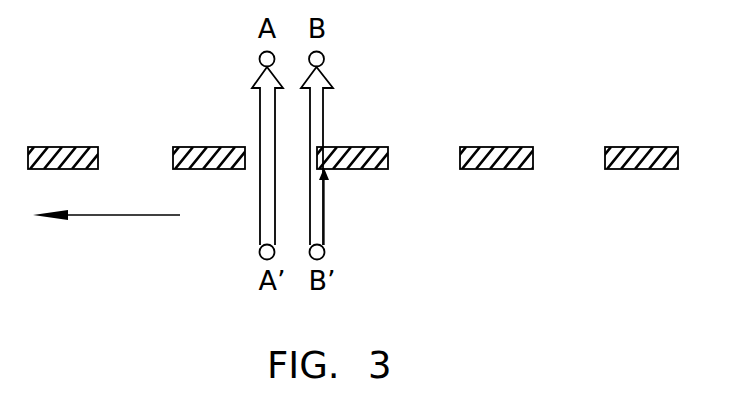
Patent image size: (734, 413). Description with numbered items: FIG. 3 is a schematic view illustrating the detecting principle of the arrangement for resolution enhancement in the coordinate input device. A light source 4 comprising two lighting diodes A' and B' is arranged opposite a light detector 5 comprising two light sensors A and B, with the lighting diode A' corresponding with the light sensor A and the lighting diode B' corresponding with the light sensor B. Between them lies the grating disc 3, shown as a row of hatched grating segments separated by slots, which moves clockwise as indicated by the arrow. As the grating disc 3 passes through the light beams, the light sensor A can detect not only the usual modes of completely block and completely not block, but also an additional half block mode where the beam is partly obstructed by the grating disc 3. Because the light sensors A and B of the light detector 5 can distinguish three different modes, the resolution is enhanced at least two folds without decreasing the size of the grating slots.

The grating disc 3 is at (496, 140).
The light source 4 is at (342, 256).
The light detector 5 is at (246, 63).